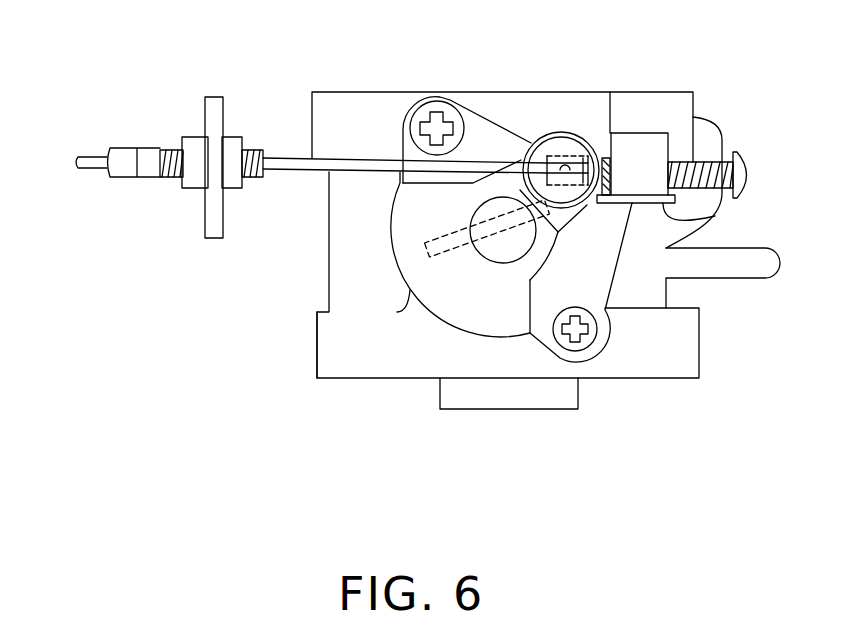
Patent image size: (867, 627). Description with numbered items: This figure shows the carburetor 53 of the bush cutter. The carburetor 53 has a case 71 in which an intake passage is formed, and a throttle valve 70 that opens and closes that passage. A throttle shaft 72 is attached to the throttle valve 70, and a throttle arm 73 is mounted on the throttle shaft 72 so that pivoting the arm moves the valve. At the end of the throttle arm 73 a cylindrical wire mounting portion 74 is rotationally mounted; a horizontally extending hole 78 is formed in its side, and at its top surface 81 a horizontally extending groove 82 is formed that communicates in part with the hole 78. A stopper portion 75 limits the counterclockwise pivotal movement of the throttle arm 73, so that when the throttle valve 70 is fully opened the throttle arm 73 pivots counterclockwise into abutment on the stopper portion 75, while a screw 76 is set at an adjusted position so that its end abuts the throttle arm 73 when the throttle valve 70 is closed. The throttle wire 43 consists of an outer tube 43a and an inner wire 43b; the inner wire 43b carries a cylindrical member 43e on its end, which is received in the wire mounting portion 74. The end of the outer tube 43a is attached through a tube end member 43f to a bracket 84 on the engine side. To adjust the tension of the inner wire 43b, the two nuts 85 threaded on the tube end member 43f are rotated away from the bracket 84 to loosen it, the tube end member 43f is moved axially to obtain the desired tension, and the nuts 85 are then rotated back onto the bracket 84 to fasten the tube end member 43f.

The throttle wire 43 is at (111, 146).
The outer tube 43a is at (123, 147).
The inner wire 43b is at (282, 157).
The cylindrical member 43e is at (605, 170).
The tube end member 43f is at (163, 177).
The nuts 85 is at (193, 137).
The bracket 84 is at (207, 220).
The cylindrical wire mounting portion 74 is at (552, 131).
The hole 78 is at (589, 138).
The screw 76 is at (753, 170).
The stopper portion 75 is at (700, 218).
The top surface 81 is at (592, 207).
The groove 82 is at (552, 255).
The carburetor 53 is at (308, 368).
The case 71 is at (353, 380).
The throttle valve 70 is at (443, 253).
The throttle shaft 72 is at (503, 263).
The throttle arm 73 is at (563, 185).